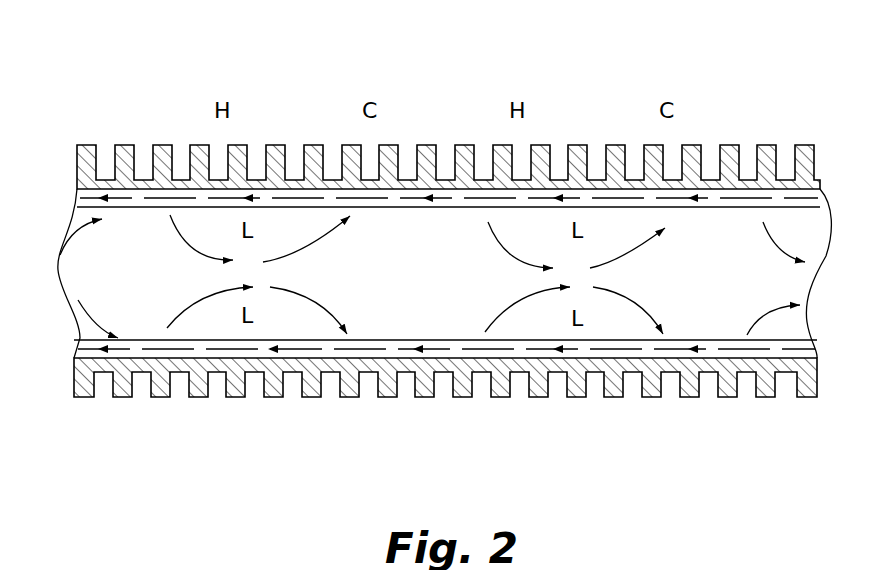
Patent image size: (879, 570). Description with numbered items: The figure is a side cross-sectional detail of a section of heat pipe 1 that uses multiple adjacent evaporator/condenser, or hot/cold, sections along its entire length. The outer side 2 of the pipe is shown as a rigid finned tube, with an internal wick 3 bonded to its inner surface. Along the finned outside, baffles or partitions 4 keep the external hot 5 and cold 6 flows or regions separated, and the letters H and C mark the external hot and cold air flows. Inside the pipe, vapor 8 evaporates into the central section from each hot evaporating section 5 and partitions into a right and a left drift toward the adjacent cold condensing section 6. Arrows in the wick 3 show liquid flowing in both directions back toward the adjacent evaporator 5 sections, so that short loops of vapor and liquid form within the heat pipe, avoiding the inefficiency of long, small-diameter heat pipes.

The heat pipe 1 is at (680, 54).
The outer side 2 is at (78, 158).
The internal wick 3 is at (78, 200).
The baffles or partitions 4 is at (146, 180).
The hot flow or evaporating section 5 is at (203, 437).
The cold flow or condensing section 6 is at (371, 440).
The vapor 8 is at (645, 251).